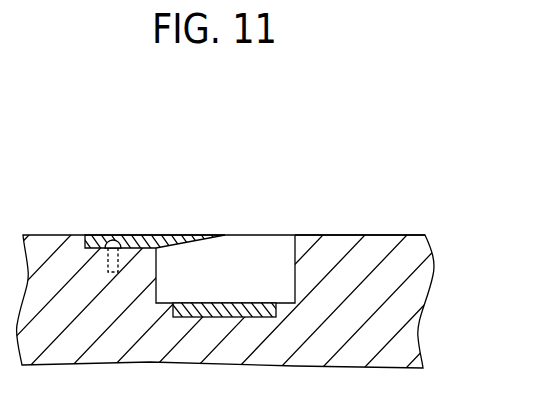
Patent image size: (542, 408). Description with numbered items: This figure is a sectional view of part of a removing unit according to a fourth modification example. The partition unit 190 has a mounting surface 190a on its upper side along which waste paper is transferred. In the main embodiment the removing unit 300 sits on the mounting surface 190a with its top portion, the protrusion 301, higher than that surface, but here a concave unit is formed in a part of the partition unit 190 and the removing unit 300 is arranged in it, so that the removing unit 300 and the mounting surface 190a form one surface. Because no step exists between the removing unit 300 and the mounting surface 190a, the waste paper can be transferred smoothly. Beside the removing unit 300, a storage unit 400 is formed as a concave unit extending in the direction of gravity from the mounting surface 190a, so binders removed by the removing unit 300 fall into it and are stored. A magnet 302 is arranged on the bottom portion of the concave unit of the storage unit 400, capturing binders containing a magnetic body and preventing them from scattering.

The partition unit 190 is at (408, 303).
The mounting surface 190a is at (365, 235).
The removing unit 300 is at (156, 215).
The protrusion 301 is at (192, 236).
The magnet 302 is at (195, 305).
The storage unit 400 is at (295, 263).